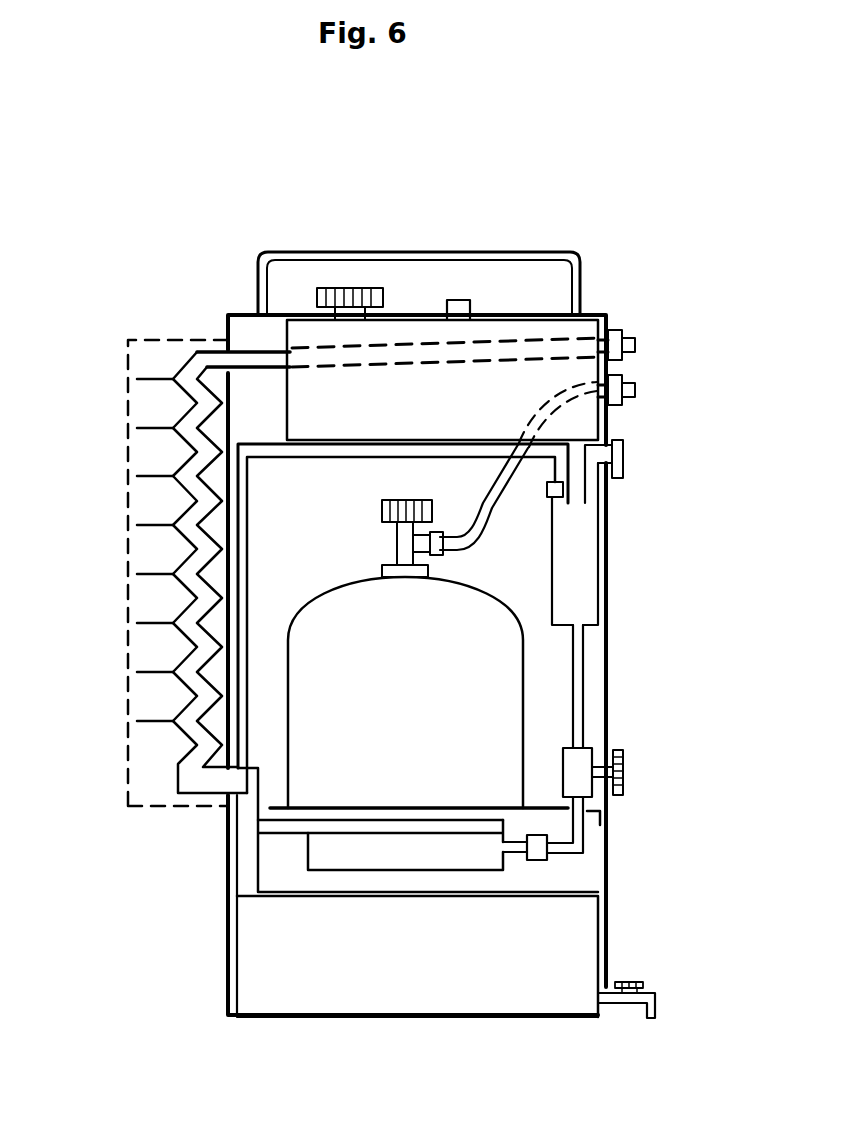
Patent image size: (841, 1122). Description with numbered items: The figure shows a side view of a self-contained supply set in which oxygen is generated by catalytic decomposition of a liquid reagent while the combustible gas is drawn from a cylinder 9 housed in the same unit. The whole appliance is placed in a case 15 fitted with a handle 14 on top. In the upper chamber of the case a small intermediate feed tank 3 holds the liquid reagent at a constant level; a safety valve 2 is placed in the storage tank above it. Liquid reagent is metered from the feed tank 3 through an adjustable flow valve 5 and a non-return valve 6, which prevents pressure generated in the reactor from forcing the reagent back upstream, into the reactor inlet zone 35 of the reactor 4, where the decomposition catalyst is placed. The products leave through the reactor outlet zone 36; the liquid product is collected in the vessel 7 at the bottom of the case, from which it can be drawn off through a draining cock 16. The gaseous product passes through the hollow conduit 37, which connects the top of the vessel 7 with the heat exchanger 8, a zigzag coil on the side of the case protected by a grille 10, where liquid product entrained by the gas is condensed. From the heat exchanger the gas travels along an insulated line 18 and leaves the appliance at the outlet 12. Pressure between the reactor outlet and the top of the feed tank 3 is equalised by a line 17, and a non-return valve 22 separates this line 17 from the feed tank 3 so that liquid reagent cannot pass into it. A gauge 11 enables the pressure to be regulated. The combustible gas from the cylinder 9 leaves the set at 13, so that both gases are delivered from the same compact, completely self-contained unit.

The safety valve 2 is at (447, 300).
The intermediate feed tank 3 is at (582, 573).
The reactor 4 is at (409, 864).
The adjustable flow valve 5 is at (577, 768).
The non-return valve 6 is at (548, 866).
The vessel 7 is at (413, 968).
The heat exchanger 8 is at (183, 566).
The cylinder 9 is at (411, 743).
The grille 10 is at (127, 370).
The gauge 11 is at (623, 465).
The outlet 12 is at (635, 346).
The combustible gas outlet 13 is at (635, 391).
The handle 14 is at (517, 254).
The case 15 is at (608, 663).
The draining cock 16 is at (643, 985).
The line 17 is at (243, 488).
The insulated line 18 is at (250, 346).
The non-return valve 22 is at (565, 490).
The reactor inlet zone 35 is at (514, 847).
The reactor outlet zone 36 is at (297, 831).
The hollow conduit 37 is at (256, 790).